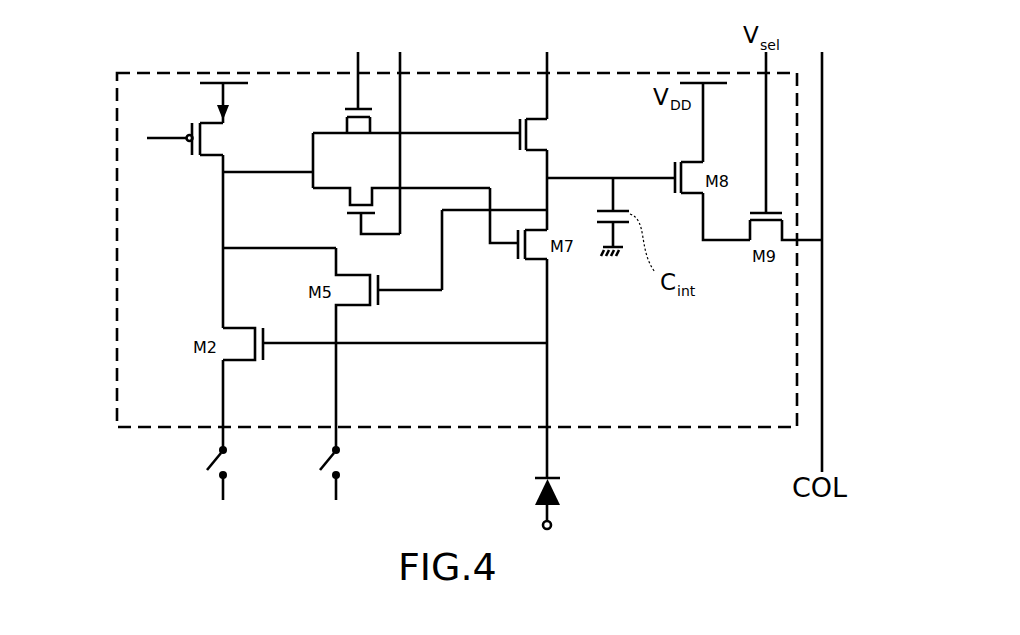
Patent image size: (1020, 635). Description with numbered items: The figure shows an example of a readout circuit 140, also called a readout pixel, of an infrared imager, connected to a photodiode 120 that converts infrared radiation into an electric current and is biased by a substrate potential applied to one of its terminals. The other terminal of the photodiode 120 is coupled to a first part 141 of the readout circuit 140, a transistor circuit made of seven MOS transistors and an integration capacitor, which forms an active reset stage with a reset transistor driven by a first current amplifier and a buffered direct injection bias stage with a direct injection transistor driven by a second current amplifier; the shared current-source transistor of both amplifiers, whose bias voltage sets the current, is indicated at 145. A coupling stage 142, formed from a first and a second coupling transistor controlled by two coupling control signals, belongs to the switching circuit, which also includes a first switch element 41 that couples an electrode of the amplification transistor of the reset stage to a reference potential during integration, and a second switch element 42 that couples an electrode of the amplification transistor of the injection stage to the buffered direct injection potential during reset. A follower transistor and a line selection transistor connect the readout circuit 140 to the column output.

The readout circuit 140 is at (116, 360).
The first part of the readout circuit 141 is at (561, 98).
The coupling stage 142 is at (299, 142).
The bias transistor 145 is at (197, 174).
The photodiode 120 is at (568, 492).
The first switch element 41 is at (343, 460).
The second switch element 42 is at (199, 461).